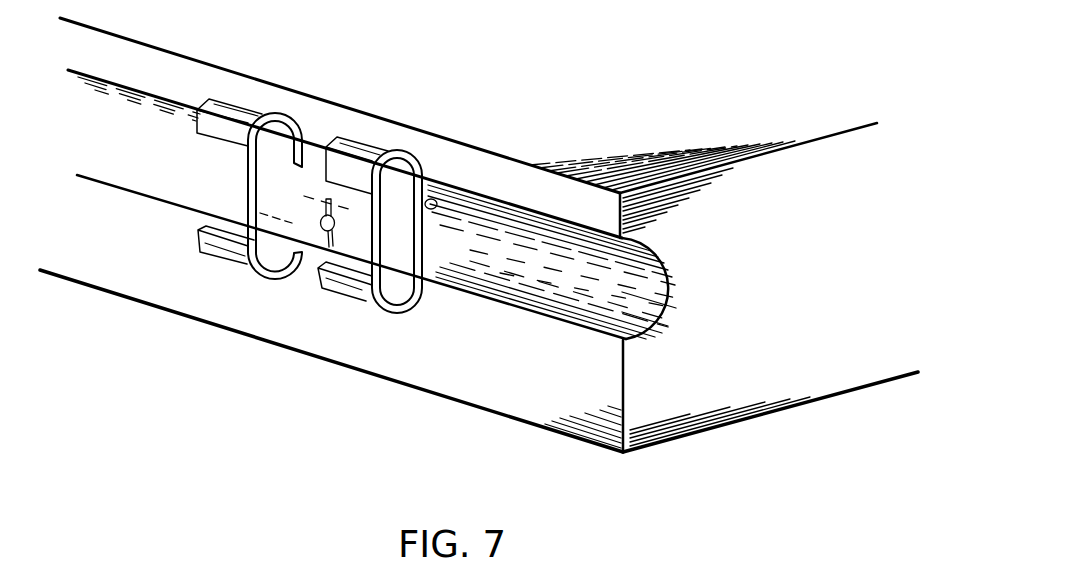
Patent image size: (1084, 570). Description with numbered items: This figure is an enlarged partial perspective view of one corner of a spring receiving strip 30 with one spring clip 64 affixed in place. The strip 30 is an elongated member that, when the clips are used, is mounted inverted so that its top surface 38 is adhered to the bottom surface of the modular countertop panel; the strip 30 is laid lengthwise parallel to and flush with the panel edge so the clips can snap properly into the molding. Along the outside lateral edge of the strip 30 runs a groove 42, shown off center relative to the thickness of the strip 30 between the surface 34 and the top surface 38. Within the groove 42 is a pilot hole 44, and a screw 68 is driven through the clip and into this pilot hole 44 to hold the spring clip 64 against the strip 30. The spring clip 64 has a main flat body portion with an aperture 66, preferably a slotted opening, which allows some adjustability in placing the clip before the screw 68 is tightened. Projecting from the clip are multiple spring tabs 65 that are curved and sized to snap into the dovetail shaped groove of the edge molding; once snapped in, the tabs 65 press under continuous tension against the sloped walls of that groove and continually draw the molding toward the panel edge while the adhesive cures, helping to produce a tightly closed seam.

The spring receiving strip 30 is at (820, 348).
The surface 34 is at (715, 430).
The top surface 38 is at (725, 112).
The groove 42 is at (610, 268).
The pilot hole 44 is at (432, 203).
The spring clip 64 is at (220, 243).
The spring tabs 65 is at (221, 110).
The aperture 66 is at (328, 197).
The screw 68 is at (323, 227).